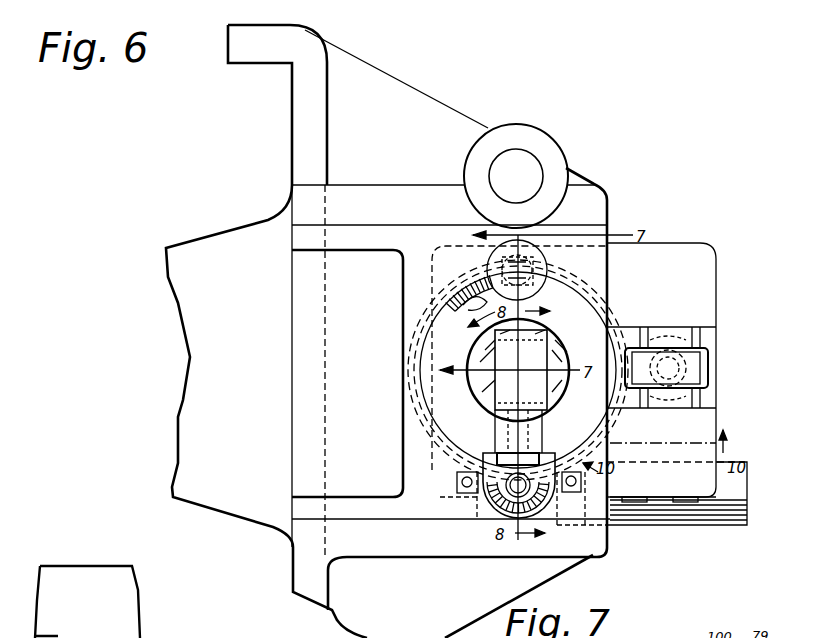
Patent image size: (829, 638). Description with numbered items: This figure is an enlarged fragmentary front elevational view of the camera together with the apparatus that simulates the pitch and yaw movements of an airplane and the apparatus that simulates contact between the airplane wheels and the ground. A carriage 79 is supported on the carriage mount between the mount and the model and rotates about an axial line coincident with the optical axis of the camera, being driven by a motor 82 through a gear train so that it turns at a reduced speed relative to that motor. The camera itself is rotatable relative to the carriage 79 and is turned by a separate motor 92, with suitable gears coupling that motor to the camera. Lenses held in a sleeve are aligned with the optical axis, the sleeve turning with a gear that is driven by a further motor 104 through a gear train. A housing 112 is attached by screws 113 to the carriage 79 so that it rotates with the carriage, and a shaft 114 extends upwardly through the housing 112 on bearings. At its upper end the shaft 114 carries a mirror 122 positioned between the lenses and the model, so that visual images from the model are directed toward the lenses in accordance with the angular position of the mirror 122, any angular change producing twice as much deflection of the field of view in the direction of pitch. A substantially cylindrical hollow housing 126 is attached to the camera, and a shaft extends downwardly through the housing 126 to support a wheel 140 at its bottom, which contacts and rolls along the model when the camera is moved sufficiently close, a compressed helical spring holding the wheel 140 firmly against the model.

The motor 82 is at (558, 163).
The motor 104 is at (548, 268).
The mirror 122 is at (530, 352).
The wheel 140 is at (712, 367).
The hollow housing 126 is at (632, 410).
The carriage 79 is at (600, 483).
The motor 92 is at (707, 507).
The housing 112 is at (550, 513).
The screws 113 is at (576, 486).
The shaft 114 is at (508, 490).